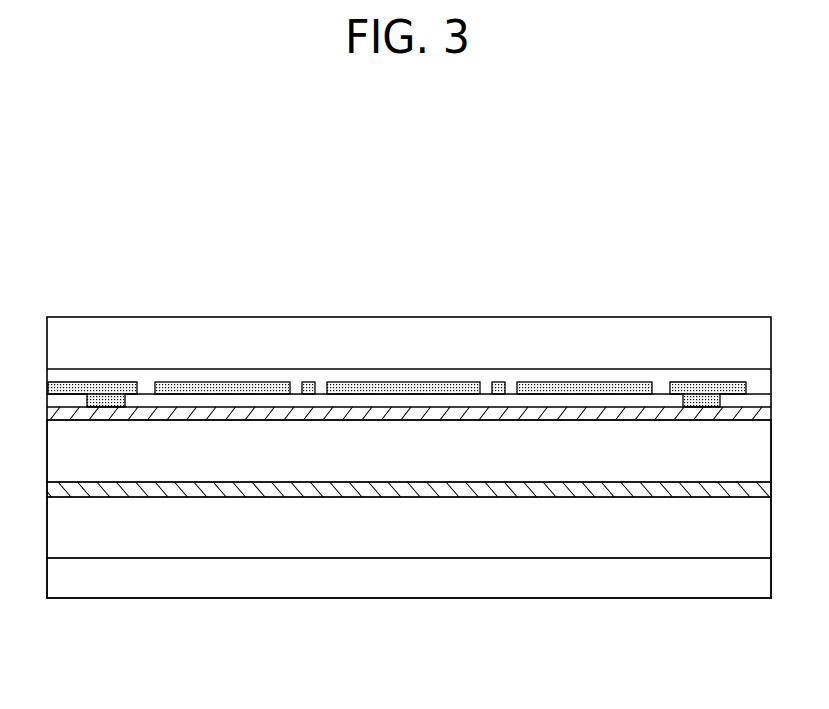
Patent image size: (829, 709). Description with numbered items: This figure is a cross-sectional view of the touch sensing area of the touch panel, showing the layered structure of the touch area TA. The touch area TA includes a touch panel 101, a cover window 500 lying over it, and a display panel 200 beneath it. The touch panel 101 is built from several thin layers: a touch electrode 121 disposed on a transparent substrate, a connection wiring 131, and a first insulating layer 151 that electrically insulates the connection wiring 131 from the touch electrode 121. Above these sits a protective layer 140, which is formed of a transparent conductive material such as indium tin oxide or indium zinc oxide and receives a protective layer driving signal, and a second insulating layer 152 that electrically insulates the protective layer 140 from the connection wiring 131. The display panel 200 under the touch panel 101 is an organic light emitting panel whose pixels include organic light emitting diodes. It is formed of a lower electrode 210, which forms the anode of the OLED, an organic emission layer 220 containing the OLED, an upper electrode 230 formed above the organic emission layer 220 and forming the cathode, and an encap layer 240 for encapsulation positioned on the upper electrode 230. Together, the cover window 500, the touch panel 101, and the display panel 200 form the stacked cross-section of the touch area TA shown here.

The cover window 500 is at (311, 338).
The touch area TA is at (710, 203).
The touch panel 101 is at (713, 252).
The connection wiring 131 is at (497, 390).
The touch electrode 121 is at (553, 390).
The first insulating layer 151 is at (605, 375).
The second insulating layer 152 is at (637, 398).
The protective layer 140 is at (678, 413).
The display panel 200 is at (643, 658).
The lower electrode 210 is at (485, 577).
The organic emission layer 220 is at (416, 543).
The upper electrode 230 is at (560, 490).
The encap layer 240 is at (625, 453).